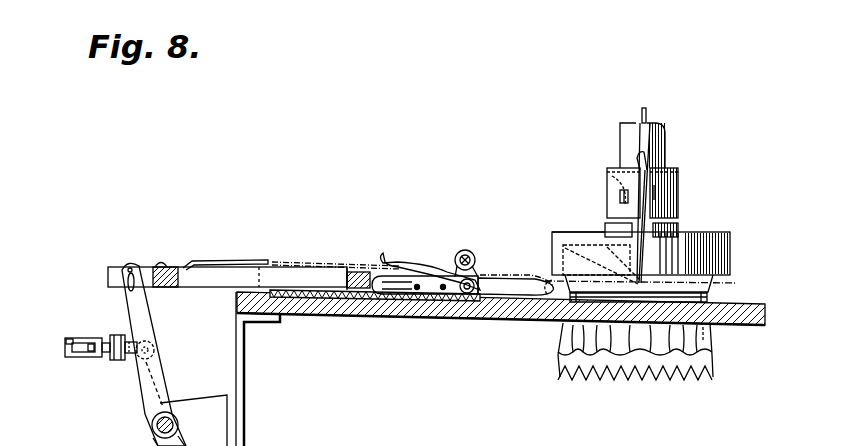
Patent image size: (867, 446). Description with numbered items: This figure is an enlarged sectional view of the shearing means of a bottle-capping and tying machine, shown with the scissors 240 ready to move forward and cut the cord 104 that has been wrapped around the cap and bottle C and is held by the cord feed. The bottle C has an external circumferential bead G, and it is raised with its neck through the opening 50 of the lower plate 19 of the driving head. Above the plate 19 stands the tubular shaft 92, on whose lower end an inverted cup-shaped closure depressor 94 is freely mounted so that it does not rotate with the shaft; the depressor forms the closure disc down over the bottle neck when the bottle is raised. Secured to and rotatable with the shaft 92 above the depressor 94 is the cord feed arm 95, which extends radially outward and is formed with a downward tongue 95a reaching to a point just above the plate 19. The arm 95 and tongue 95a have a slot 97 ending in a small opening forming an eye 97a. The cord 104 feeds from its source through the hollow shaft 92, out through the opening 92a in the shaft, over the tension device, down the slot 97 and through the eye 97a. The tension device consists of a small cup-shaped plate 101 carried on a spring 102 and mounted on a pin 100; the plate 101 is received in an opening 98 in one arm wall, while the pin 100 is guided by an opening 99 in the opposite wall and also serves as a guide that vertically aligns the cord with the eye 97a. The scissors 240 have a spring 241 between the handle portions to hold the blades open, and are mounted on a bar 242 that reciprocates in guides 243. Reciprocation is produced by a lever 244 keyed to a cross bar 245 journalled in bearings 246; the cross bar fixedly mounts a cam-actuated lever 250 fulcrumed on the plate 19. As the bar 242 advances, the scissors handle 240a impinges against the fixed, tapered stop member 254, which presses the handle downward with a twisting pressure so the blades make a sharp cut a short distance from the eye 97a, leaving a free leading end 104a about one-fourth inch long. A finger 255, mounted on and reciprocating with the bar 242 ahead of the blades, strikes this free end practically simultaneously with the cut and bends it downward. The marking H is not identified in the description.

The lower plate 19 is at (762, 306).
The opening 50 is at (705, 328).
The tubular shaft 92 is at (666, 148).
The opening in shaft 92a is at (637, 158).
The closure depressor 94 is at (730, 243).
The cord feed arm 95 is at (680, 205).
The downward extension or tongue 95a is at (648, 260).
The slot 97 is at (636, 218).
The eye 97a is at (600, 237).
The opening 98 is at (607, 171).
The opening 99 is at (680, 172).
The pin 100 is at (656, 193).
The cup-shaped plate 101 is at (612, 184).
The spring 102 is at (620, 196).
The cord 104 is at (648, 110).
The free leading end 104a is at (601, 264).
The shears or scissors 240 is at (503, 298).
The scissors handle 240a is at (386, 252).
The spring 241 is at (395, 296).
The bar 242 is at (306, 291).
The guides 243 is at (298, 306).
The lever 244 is at (128, 313).
The cross bar 245 is at (154, 425).
The bearings 246 is at (207, 394).
The lever 250 is at (67, 346).
The stop member 254 is at (468, 250).
The finger 255 is at (238, 261).
The external circumferential bead G is at (735, 283).
The hem H is at (713, 340).
The bottle C is at (713, 375).